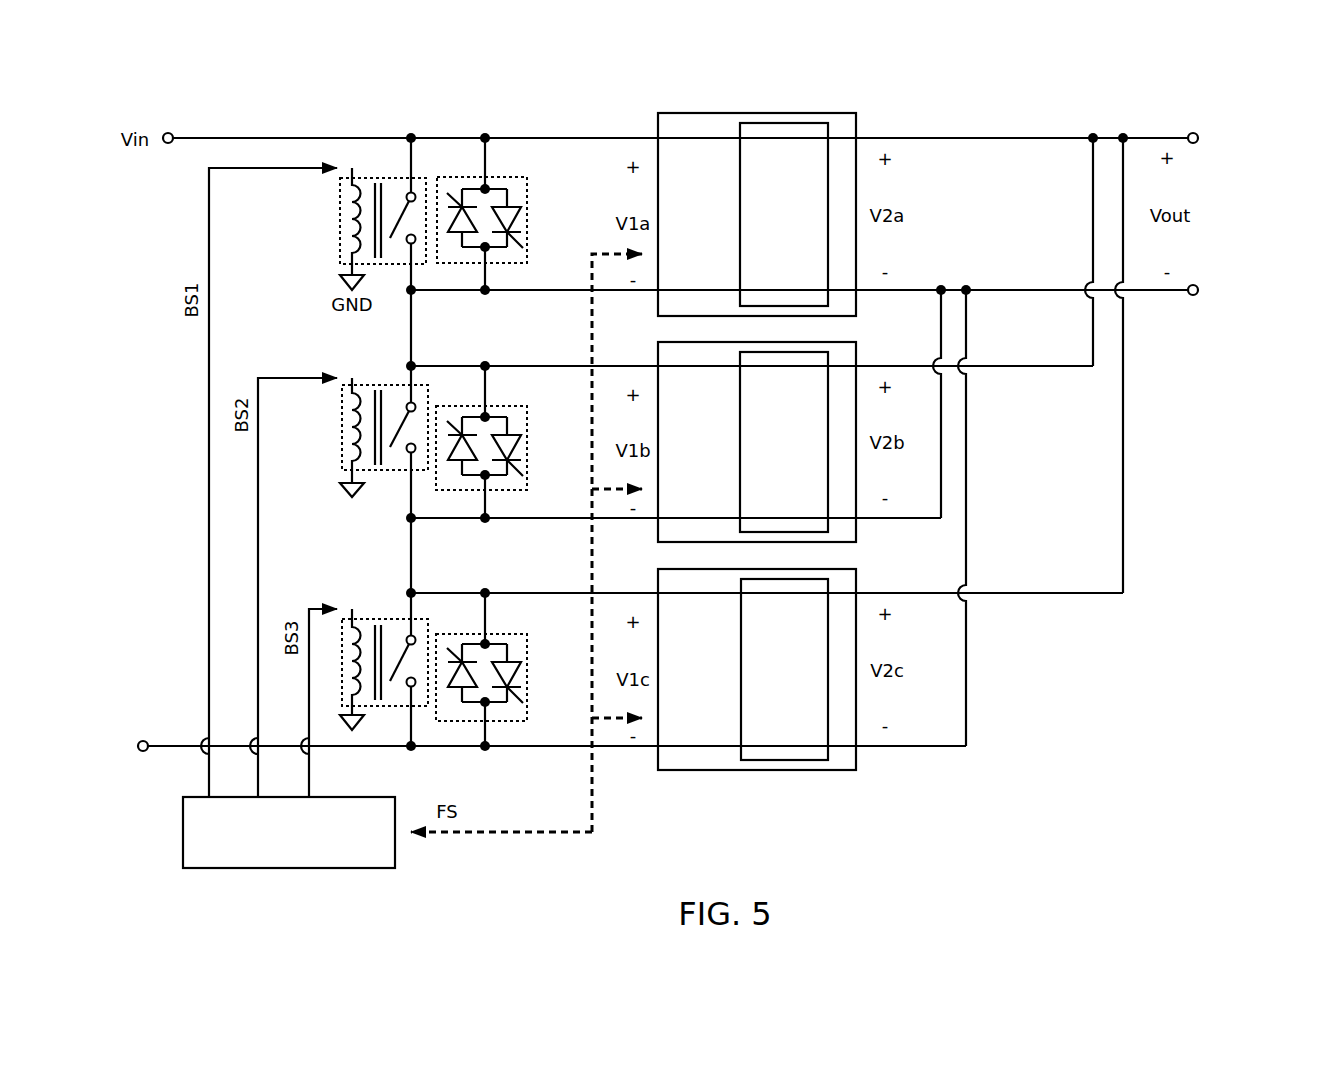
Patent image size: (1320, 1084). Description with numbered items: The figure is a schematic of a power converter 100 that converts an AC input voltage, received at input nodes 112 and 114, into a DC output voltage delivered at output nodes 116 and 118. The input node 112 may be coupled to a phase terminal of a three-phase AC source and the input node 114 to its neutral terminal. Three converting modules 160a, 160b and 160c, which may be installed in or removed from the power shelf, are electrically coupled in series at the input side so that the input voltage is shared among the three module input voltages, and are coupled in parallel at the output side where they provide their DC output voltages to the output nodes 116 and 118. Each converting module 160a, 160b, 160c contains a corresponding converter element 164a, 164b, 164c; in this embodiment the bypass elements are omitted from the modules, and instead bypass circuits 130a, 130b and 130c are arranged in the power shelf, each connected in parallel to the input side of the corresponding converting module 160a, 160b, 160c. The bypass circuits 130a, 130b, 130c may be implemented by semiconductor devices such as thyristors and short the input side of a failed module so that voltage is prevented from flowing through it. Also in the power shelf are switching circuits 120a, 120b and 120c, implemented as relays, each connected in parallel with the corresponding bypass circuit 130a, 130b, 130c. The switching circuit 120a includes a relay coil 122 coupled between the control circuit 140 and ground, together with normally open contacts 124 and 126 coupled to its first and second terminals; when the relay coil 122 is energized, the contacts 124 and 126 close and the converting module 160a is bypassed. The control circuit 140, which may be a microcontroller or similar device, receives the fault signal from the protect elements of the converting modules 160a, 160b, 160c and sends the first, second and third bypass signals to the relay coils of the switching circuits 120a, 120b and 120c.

The power converter 100 is at (176, 81).
The input node 112 is at (167, 145).
The input node 114 is at (143, 740).
The output node 116 is at (1199, 138).
The output node 118 is at (1199, 290).
The switching circuit 120a is at (353, 200).
The switching circuit 120b is at (377, 384).
The switching circuit 120c is at (380, 619).
The relay coil 122 is at (345, 231).
The contact 124 is at (421, 190).
The contact 126 is at (413, 244).
The bypass circuit 130a is at (527, 243).
The bypass circuit 130b is at (527, 478).
The bypass circuit 130c is at (527, 708).
The control circuit 140 is at (289, 832).
The converting module 160a is at (808, 206).
The converting module 160b is at (802, 457).
The converting module 160c is at (791, 690).
The converter element 164a is at (784, 214).
The converter element 164b is at (784, 442).
The converter element 164c is at (784, 669).